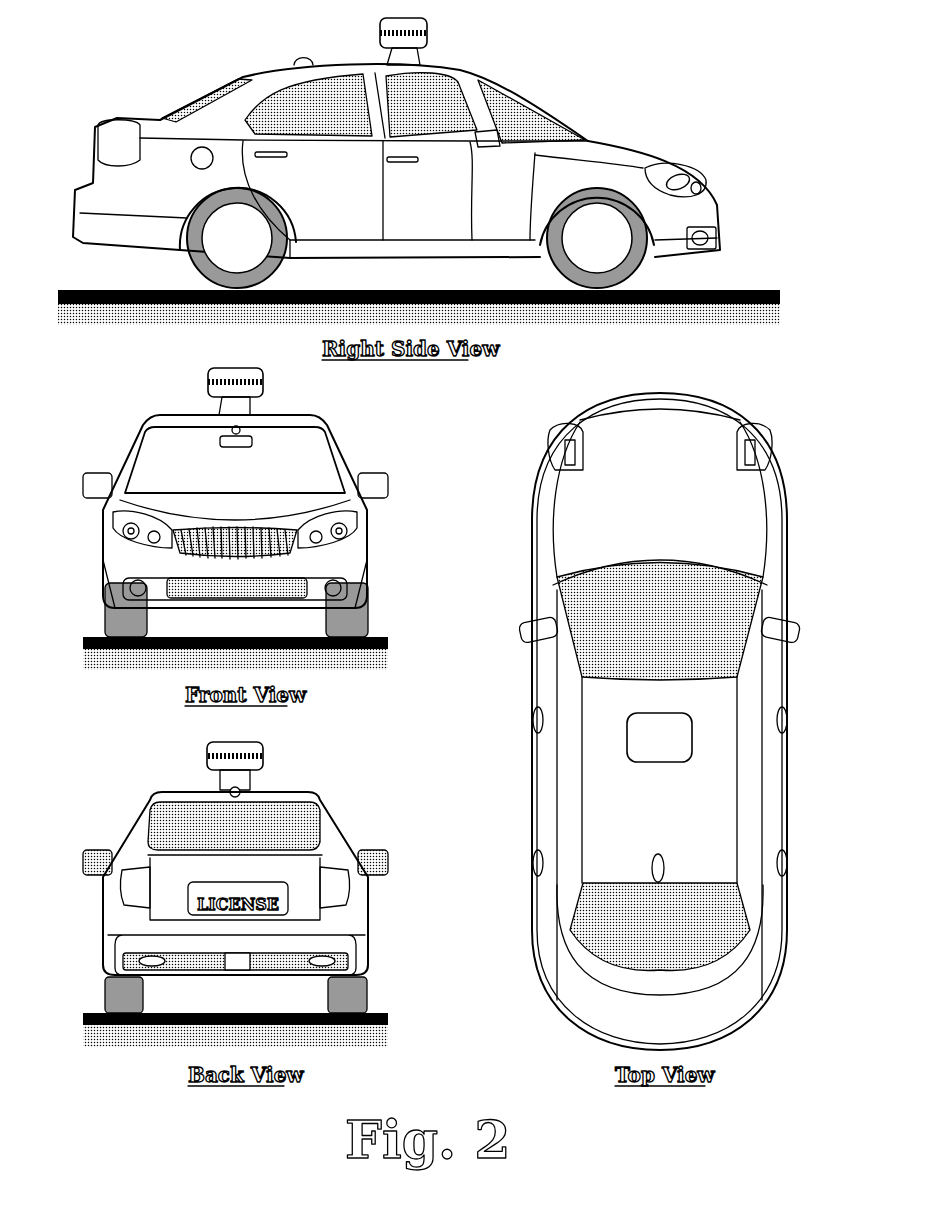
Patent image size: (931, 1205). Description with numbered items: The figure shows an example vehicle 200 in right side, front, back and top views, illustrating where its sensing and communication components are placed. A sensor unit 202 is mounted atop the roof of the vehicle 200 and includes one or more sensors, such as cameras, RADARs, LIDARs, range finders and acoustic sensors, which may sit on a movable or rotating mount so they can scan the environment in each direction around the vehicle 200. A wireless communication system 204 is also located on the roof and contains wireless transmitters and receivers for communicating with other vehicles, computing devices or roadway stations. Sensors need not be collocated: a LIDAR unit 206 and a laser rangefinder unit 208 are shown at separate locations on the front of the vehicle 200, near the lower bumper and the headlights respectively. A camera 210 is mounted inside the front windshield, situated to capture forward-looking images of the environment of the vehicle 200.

The vehicle 200 is at (73, 108).
The sensor unit 202 is at (428, 38).
The wireless communication system 204 is at (300, 61).
The LIDAR unit 206 is at (719, 236).
The laser rangefinder unit 208 is at (690, 187).
The camera 210 is at (241, 433).